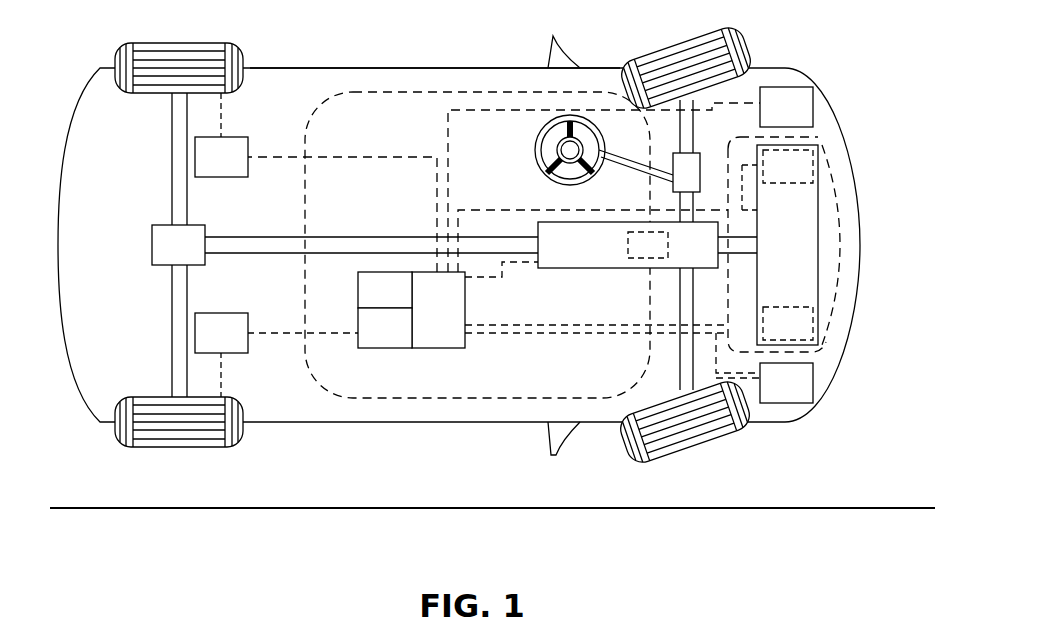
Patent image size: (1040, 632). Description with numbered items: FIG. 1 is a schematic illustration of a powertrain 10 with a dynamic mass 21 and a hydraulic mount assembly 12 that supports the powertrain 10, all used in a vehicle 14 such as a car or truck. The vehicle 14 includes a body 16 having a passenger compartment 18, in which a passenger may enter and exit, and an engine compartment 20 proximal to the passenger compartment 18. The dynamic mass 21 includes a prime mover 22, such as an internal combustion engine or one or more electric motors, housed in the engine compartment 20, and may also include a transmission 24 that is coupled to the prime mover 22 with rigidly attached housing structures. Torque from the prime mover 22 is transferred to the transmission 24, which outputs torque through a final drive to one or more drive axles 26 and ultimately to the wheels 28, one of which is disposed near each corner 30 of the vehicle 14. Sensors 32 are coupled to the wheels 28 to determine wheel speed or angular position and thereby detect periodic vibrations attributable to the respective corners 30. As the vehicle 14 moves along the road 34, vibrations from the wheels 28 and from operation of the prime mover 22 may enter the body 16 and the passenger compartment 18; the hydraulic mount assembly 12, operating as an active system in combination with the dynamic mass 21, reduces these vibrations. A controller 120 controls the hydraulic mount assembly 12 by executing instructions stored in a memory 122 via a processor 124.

The powertrain 10 is at (843, 206).
The hydraulic mount assembly 12 is at (628, 252).
The vehicle 14 is at (825, 52).
The body 16 is at (322, 68).
The passenger compartment 18 is at (482, 402).
The engine compartment 20 is at (838, 312).
The dynamic mass 21 is at (818, 285).
The prime mover 22 is at (810, 258).
The transmission 24 is at (681, 256).
The drive axle 26 is at (192, 258).
The wheel 28 is at (175, 43).
The corner 30 is at (102, 68).
The sensor 32 is at (235, 170).
The road 34 is at (690, 510).
The controller 120 is at (420, 323).
The memory 122 is at (366, 302).
The processor 124 is at (366, 340).